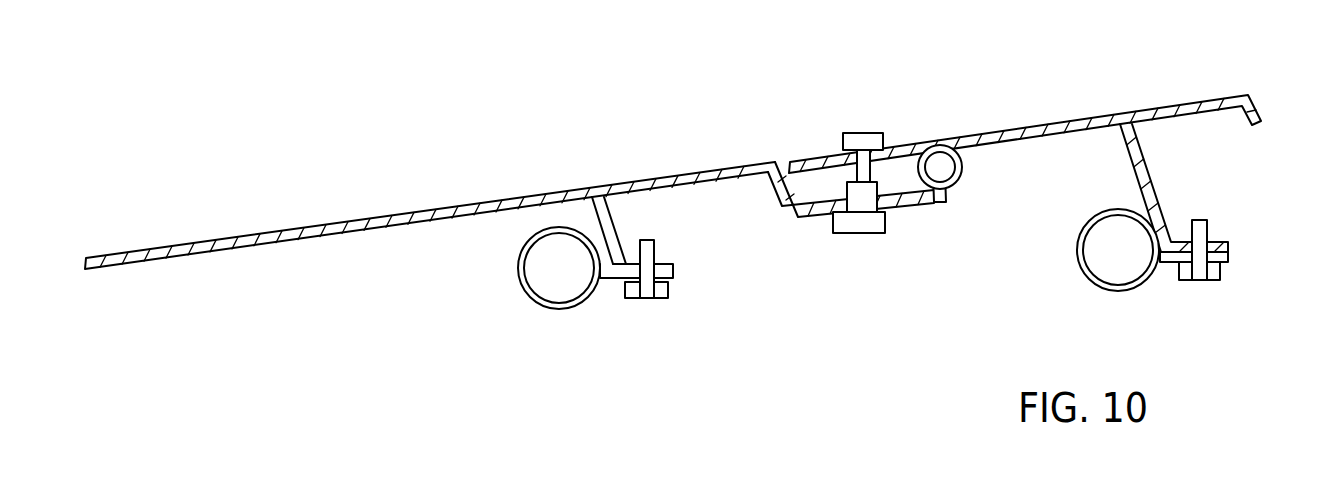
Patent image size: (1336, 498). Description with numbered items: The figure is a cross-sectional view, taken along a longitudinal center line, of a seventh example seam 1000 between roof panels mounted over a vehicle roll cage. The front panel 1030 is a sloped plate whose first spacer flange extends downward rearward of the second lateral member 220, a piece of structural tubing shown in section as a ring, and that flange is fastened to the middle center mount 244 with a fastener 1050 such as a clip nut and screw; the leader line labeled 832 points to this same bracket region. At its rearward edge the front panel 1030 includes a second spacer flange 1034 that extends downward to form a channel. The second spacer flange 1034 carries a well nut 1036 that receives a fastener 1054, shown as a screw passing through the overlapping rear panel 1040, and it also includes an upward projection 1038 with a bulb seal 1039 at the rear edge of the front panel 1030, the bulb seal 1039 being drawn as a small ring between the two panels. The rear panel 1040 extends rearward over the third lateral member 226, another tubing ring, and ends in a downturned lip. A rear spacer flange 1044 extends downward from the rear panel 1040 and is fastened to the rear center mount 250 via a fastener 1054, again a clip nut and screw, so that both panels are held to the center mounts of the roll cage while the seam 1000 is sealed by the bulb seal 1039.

The seventh example seam 1000 is at (699, 231).
The front panel 1030 is at (430, 195).
The second spacer flange 1034 is at (803, 240).
The rear panel 1040 is at (1025, 130).
The rear spacer flange 1044 is at (1199, 188).
The rear center mount 250 is at (1144, 295).
The third lateral member 226 is at (1072, 256).
The fastener 1054 is at (1020, 212).
The middle center mount 244 is at (511, 246).
The bracket arm 832 is at (504, 201).
The second lateral member 220 is at (512, 278).
The fastener 1050 is at (608, 309).
The well nut 1036 is at (898, 248).
The upward projection 1038 is at (997, 210).
The bulb seal 1039 is at (999, 183).